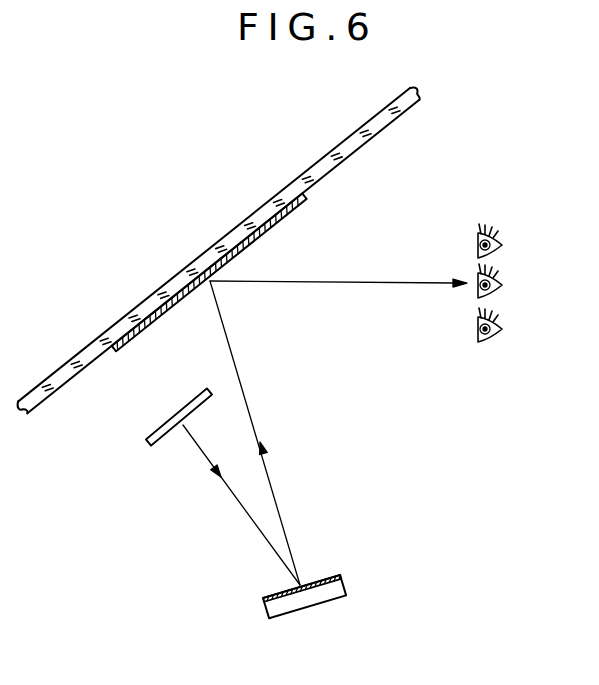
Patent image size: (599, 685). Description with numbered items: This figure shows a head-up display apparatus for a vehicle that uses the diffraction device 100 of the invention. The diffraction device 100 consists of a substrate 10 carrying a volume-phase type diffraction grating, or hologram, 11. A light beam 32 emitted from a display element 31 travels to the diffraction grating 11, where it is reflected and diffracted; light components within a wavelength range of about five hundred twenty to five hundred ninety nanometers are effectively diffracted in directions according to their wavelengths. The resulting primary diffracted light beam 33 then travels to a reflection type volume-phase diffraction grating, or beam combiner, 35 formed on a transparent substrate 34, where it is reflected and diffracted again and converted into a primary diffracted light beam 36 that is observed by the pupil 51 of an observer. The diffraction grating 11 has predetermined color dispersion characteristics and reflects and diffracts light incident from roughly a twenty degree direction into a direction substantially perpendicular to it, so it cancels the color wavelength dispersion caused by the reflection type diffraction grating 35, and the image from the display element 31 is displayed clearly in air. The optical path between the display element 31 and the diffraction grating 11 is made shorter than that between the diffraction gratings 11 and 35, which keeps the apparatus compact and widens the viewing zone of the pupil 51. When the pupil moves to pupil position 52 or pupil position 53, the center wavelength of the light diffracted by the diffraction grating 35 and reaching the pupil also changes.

The substrate 10 is at (347, 592).
The diffraction grating 11 is at (342, 577).
The display element 31 is at (170, 432).
The light beam 32 is at (229, 492).
The primary diffracted light beam 33 is at (268, 457).
The transparent substrate 34 is at (343, 158).
The reflection type diffraction grating 35 is at (278, 222).
The primary diffracted light beam 36 is at (366, 283).
The pupil 51 is at (503, 285).
The pupil position 52 is at (503, 244).
The pupil position 53 is at (503, 329).
The diffraction device 100 is at (370, 586).